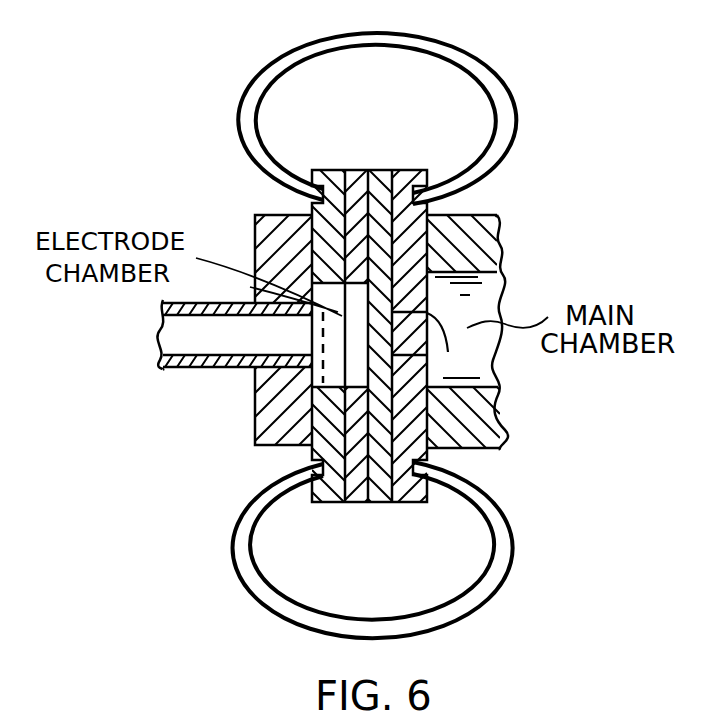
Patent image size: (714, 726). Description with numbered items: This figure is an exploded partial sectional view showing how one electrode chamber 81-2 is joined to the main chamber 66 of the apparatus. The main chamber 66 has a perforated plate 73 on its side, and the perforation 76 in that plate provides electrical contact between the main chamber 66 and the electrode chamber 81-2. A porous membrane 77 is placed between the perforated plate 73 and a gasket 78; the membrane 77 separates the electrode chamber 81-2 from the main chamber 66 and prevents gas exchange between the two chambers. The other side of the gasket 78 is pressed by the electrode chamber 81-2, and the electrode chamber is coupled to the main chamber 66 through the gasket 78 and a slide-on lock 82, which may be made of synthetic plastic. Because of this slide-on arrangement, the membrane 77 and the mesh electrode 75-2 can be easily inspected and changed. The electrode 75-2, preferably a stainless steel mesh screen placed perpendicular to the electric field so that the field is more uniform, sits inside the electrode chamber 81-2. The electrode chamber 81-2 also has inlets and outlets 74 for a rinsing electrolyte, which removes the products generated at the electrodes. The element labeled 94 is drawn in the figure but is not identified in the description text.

The slide-on lock 82 is at (488, 73).
The gasket 78 is at (358, 168).
The porous membrane 77 is at (382, 168).
The housing block 94 is at (310, 253).
The inlets and outlets 74 is at (192, 336).
The mesh electrode 75-2 is at (323, 332).
The electrode chamber 81-2 is at (310, 417).
The main chamber 66 is at (483, 288).
The perforated plate 73 is at (495, 418).
The perforation 76 is at (428, 357).